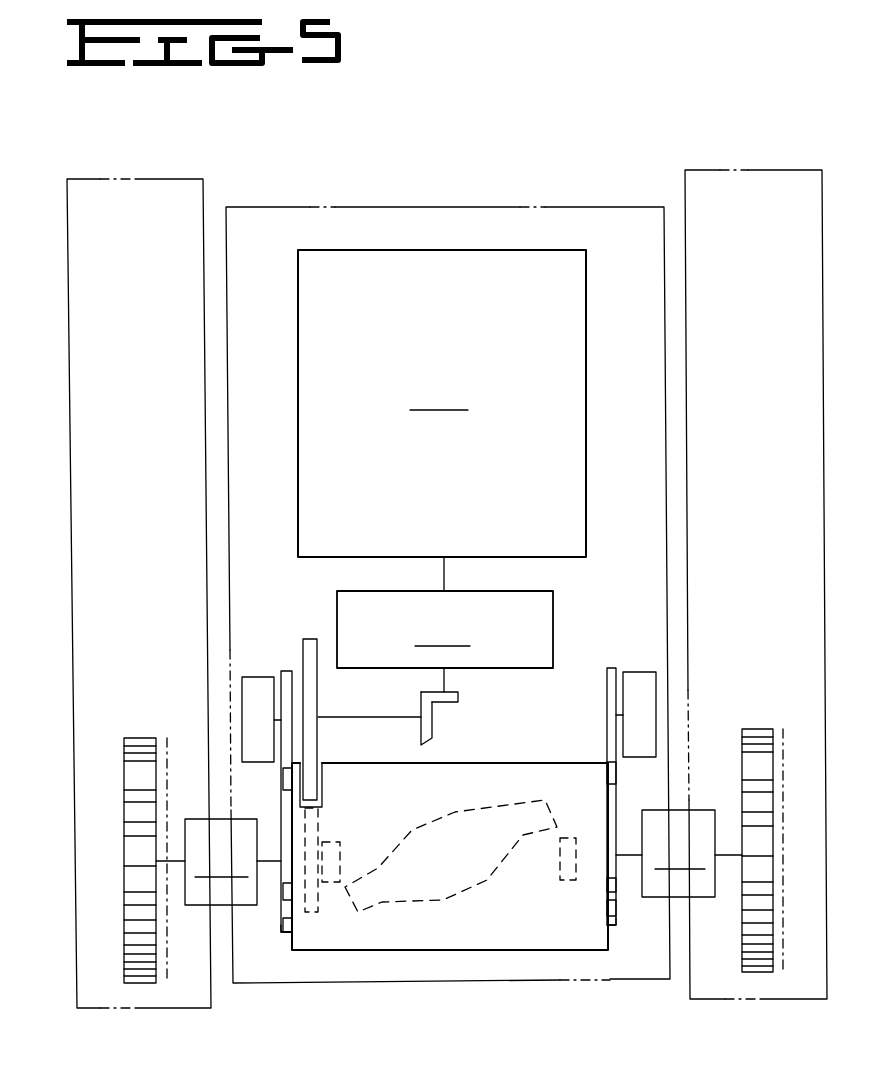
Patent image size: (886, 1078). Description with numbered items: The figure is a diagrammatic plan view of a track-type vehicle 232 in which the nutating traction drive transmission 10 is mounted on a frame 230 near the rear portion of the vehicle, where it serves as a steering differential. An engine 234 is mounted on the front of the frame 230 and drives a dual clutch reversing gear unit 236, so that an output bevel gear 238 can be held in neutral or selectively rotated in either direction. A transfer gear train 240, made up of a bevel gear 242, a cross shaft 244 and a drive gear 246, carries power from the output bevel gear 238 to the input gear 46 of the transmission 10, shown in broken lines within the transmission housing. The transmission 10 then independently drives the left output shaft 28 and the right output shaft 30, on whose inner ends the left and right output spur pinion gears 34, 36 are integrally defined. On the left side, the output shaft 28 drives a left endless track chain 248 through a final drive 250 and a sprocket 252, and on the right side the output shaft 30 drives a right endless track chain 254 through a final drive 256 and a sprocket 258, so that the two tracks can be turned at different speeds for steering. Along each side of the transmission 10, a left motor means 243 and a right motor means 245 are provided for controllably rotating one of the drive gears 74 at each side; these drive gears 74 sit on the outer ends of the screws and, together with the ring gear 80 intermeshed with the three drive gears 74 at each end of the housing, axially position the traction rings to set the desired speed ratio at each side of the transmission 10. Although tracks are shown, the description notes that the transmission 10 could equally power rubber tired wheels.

The nutating traction drive transmission 10 is at (532, 760).
The left output shaft 28 is at (268, 857).
The right output shaft 30 is at (630, 853).
The left output spur pinion gear 34 is at (330, 845).
The right output spur pinion gear 36 is at (568, 880).
The input gear 46 is at (320, 822).
The drive gear 74 is at (283, 778).
The ring gear 80 is at (283, 932).
The frame 230 is at (397, 207).
The track-type vehicle 232 is at (488, 170).
The engine 234 is at (442, 403).
The dual clutch reversing gear unit 236 is at (445, 624).
The output bevel gear 238 is at (460, 697).
The transfer gear train 240 is at (310, 640).
The bevel gear 242 is at (434, 728).
The left motor means 243 is at (248, 690).
The cross shaft 244 is at (387, 717).
The right motor means 245 is at (648, 692).
The drive gear 246 is at (304, 650).
The left endless track chain 248 is at (133, 179).
The final drive 250 is at (206, 862).
The sprocket 252 is at (135, 740).
The right endless track chain 254 is at (760, 170).
The final drive 256 is at (692, 853).
The sprocket 258 is at (757, 728).